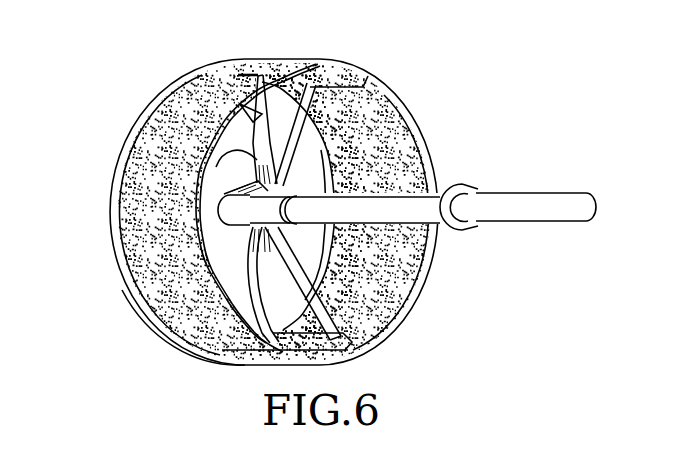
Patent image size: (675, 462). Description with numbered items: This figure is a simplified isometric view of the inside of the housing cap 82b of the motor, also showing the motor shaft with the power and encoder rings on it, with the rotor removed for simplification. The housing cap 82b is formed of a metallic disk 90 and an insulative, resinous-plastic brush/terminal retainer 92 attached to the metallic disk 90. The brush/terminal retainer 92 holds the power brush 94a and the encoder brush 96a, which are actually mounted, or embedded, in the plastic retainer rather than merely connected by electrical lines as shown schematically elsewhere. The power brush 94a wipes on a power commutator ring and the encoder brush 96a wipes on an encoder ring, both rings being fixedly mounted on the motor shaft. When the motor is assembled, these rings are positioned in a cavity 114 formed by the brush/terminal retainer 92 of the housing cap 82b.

The metallic disk 90 is at (110, 201).
The brush/terminal retainer 92 is at (168, 128).
The encoder brush 96a is at (272, 153).
The power brush 94a is at (281, 184).
The cavity 114 is at (406, 166).
The housing cap 82b is at (130, 337).